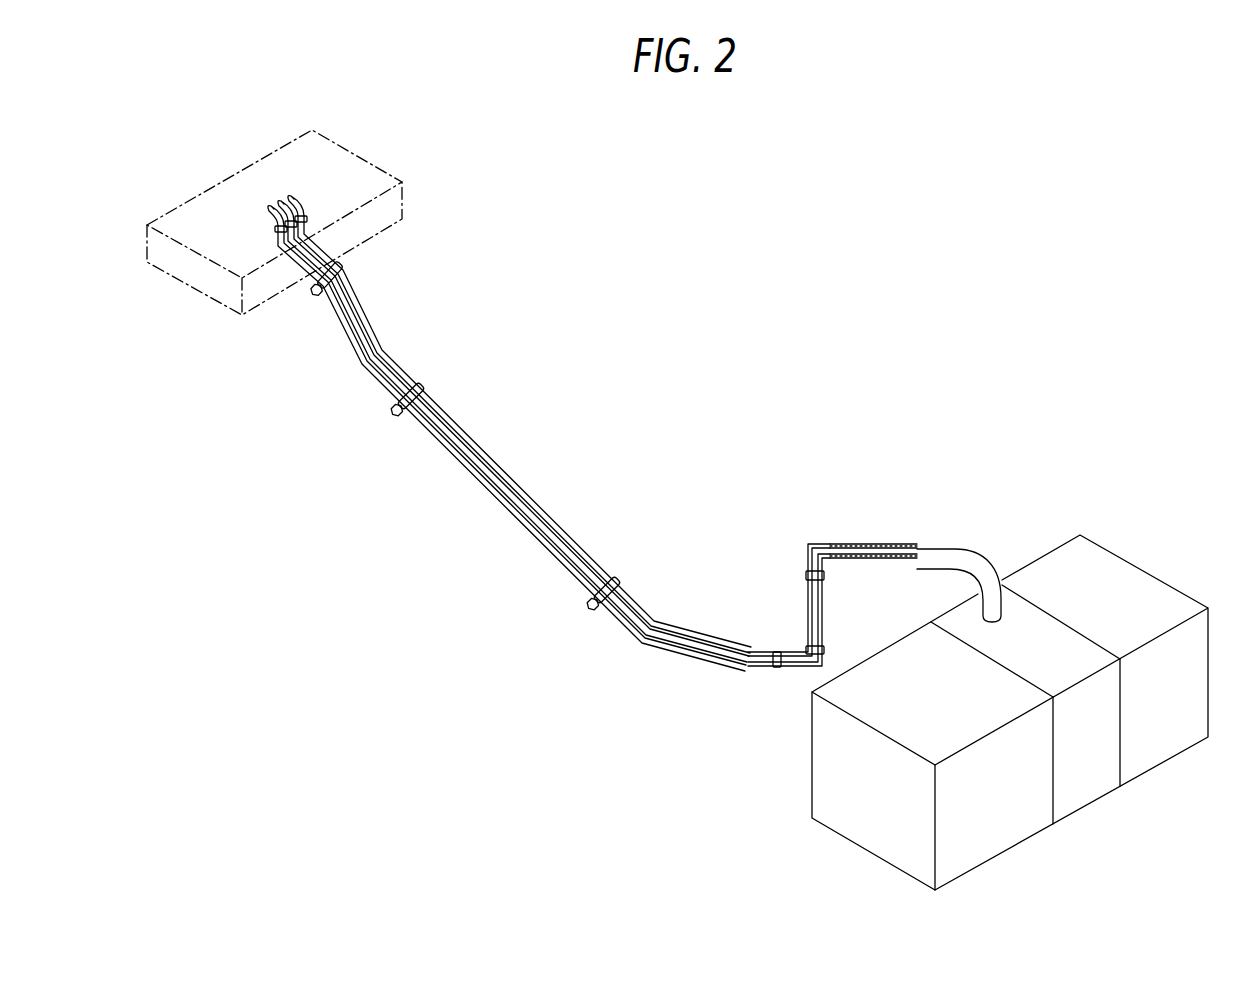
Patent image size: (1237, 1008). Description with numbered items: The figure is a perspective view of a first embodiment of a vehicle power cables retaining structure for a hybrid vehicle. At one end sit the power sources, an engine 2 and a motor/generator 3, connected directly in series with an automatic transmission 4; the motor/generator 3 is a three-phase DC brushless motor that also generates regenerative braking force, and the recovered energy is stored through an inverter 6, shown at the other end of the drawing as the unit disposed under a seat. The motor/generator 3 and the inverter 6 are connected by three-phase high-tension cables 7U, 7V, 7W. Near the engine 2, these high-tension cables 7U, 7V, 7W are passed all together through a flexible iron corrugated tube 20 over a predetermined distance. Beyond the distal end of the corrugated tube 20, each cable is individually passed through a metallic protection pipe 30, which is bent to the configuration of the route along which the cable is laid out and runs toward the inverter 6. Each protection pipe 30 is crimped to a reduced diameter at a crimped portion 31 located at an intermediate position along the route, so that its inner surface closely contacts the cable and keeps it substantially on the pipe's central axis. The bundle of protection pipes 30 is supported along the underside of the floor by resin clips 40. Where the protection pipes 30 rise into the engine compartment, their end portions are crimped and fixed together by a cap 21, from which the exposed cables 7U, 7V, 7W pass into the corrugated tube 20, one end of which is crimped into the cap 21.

The engine 2 is at (1002, 823).
The motor/generator 3 is at (1088, 783).
The automatic transmission 4 is at (1162, 747).
The inverter 6 is at (362, 152).
The high-tension cable 7U is at (868, 562).
The high-tension cable 7V is at (813, 545).
The high-tension cable 7W is at (847, 543).
The corrugated tube 20 is at (937, 548).
The cap 21 is at (808, 577).
The protection pipe 30 is at (625, 598).
The crimped portion 31 is at (509, 459).
The resin clip 40 is at (345, 268).